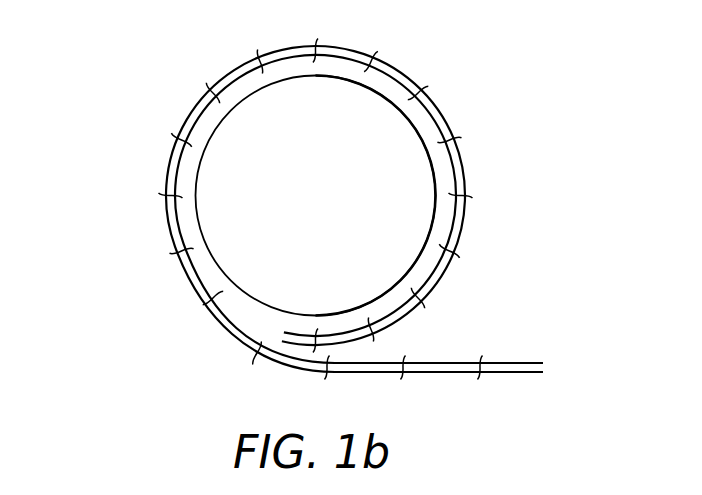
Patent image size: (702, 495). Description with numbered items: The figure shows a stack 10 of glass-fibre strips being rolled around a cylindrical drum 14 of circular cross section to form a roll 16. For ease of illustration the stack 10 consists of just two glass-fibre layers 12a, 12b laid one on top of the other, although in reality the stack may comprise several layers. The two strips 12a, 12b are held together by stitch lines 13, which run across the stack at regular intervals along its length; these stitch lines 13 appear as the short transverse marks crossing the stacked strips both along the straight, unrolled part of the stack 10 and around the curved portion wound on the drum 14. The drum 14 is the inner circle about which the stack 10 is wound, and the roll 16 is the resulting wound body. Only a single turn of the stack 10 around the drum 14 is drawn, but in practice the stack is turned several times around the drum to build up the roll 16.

The stack 10 is at (437, 387).
The glass-fibre strip 12a is at (521, 362).
The glass-fibre strip 12b is at (521, 373).
The stitch lines 13 is at (452, 140).
The cylindrical drum 14 is at (298, 88).
The roll 16 is at (144, 163).